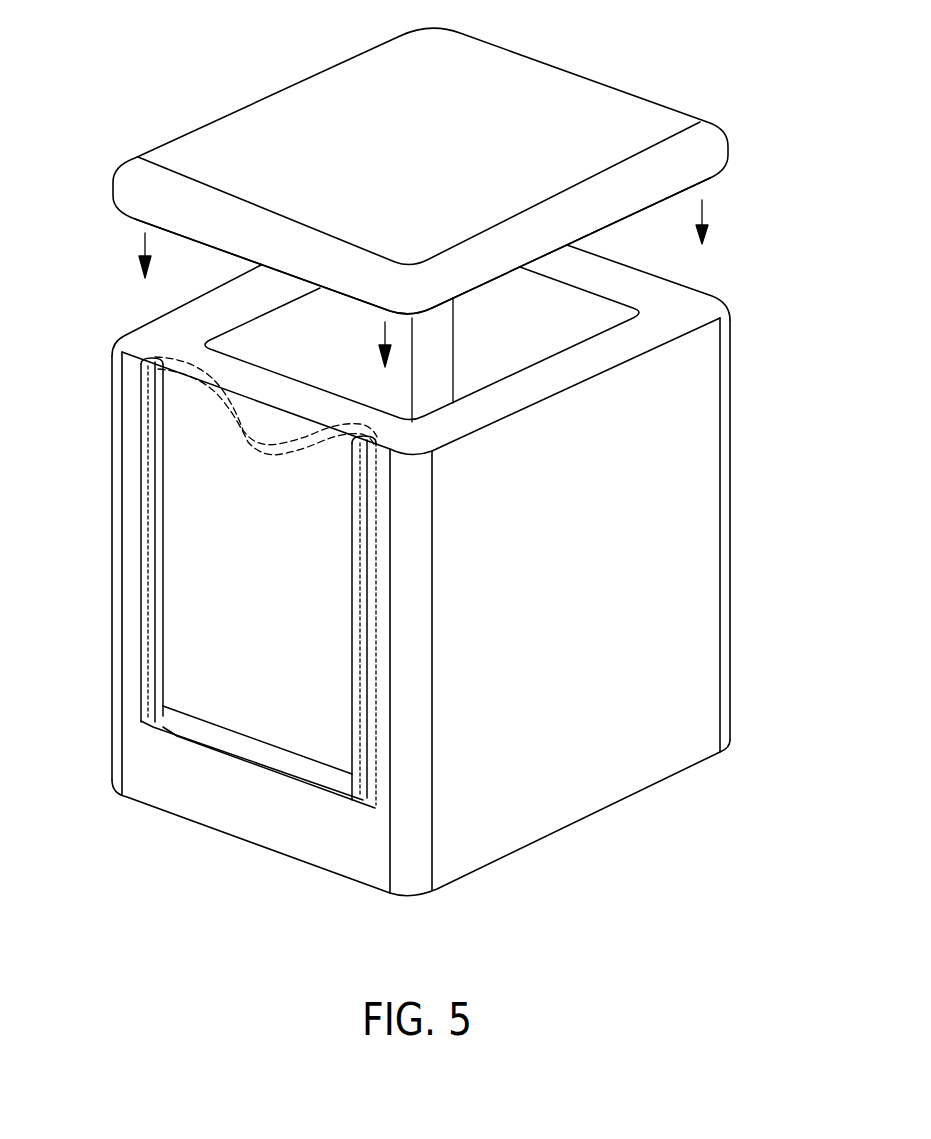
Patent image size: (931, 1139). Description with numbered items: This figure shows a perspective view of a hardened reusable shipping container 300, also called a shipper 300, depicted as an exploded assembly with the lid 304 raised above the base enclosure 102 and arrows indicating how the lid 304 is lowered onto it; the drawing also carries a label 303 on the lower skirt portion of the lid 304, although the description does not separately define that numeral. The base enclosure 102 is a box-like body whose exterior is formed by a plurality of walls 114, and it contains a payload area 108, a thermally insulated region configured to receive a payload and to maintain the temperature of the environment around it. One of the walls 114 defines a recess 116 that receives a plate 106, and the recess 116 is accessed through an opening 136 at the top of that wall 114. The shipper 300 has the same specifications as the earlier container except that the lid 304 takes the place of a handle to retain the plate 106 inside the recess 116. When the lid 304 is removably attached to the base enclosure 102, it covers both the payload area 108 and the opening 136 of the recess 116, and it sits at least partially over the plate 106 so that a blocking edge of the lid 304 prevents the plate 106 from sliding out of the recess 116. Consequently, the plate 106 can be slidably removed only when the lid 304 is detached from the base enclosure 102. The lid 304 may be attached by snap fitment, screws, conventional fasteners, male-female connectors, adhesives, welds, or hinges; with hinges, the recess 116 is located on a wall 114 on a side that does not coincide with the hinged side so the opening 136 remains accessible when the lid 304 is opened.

The hardened reusable shipping container 300 is at (690, 86).
The lid 304 is at (722, 133).
The lid skirt / plug portion 303 is at (194, 240).
The base enclosure 102 is at (688, 517).
The payload area 108 is at (570, 317).
The plate 106 is at (173, 478).
The walls 114 is at (128, 563).
The opening 136 is at (153, 360).
The recess 116 is at (178, 733).